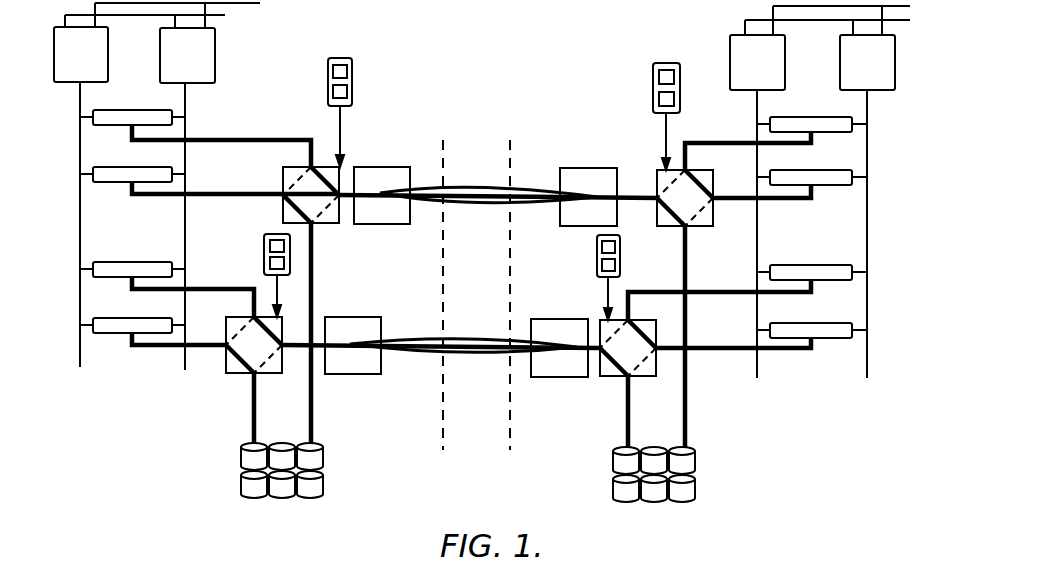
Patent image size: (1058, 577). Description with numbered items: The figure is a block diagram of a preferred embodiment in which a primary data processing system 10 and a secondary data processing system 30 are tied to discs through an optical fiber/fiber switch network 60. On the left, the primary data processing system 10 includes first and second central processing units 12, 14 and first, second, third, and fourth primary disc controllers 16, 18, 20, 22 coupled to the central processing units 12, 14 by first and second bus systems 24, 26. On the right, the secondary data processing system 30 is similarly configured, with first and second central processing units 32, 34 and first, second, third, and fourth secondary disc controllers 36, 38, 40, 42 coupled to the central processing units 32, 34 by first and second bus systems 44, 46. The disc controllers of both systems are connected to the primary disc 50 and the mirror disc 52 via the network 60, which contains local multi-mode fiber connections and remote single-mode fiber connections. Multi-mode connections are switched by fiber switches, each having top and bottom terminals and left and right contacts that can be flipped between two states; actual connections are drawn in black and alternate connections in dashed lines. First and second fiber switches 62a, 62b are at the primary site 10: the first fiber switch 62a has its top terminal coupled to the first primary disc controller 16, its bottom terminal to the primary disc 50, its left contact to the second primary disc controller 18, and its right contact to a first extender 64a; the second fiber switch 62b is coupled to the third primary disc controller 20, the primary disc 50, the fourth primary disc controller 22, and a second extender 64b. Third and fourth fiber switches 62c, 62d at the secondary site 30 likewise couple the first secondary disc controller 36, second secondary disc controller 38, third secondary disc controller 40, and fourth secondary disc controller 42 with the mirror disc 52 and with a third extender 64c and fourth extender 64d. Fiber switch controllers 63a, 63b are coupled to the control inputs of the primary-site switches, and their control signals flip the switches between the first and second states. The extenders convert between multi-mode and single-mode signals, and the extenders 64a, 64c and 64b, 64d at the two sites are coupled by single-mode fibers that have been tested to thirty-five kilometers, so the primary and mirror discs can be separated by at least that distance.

The primary data processing system 10 is at (170, 43).
The first central processing unit 12 is at (94, 71).
The second central processing unit 14 is at (200, 72).
The first primary disc controller 16 is at (116, 110).
The second primary disc controller 18 is at (99, 167).
The third primary disc controller 20 is at (98, 262).
The fourth primary disc controller 22 is at (94, 318).
The first bus system 24 is at (73, 217).
The second bus system 26 is at (178, 217).
The secondary data processing system 30 is at (837, 48).
The first central processing unit 32 is at (770, 79).
The second central processing unit 34 is at (880, 79).
The first secondary disc controller 36 is at (790, 117).
The second secondary disc controller 38 is at (812, 170).
The third secondary disc controller 40 is at (810, 265).
The fourth secondary disc controller 42 is at (813, 323).
The first bus system 44 is at (750, 229).
The second bus system 46 is at (860, 229).
The primary disc 50 is at (326, 462).
The mirror disc 52 is at (698, 466).
The optical fiber/fiber switch network 60 is at (492, 142).
The first fiber switch 62a is at (346, 167).
The second fiber switch 62b is at (239, 374).
The third fiber switch 62c is at (708, 172).
The fourth fiber switch 62d is at (617, 378).
The fiber switch controller 63a is at (350, 60).
The fiber switch controller 63b is at (264, 257).
The first extender 64a is at (394, 167).
The second extender 64b is at (380, 317).
The third extender 64c is at (569, 168).
The fourth extender 64d is at (541, 319).